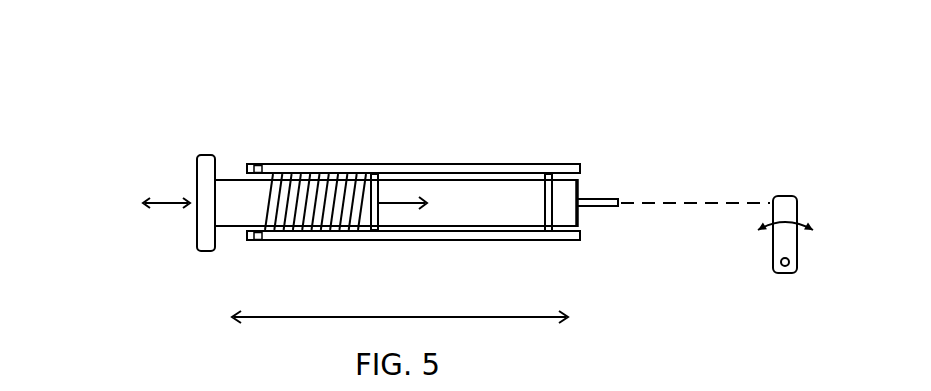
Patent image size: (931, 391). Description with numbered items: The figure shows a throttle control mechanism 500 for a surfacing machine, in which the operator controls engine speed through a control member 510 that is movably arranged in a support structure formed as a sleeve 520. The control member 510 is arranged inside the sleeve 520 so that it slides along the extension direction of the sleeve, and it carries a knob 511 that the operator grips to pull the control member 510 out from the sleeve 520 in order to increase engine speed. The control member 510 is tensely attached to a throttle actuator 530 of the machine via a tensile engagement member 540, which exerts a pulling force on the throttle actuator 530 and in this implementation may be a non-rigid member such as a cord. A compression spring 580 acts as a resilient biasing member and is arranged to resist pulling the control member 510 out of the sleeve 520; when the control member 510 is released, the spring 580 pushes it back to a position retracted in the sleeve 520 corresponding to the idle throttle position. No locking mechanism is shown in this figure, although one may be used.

The throttle control mechanism 500 is at (99, 48).
The control member 510 is at (237, 212).
The knob 511 is at (203, 153).
The sleeve 520 is at (423, 164).
The throttle actuator 530 is at (790, 198).
The tensile engagement member 540 is at (614, 201).
The compression spring 580 is at (305, 173).